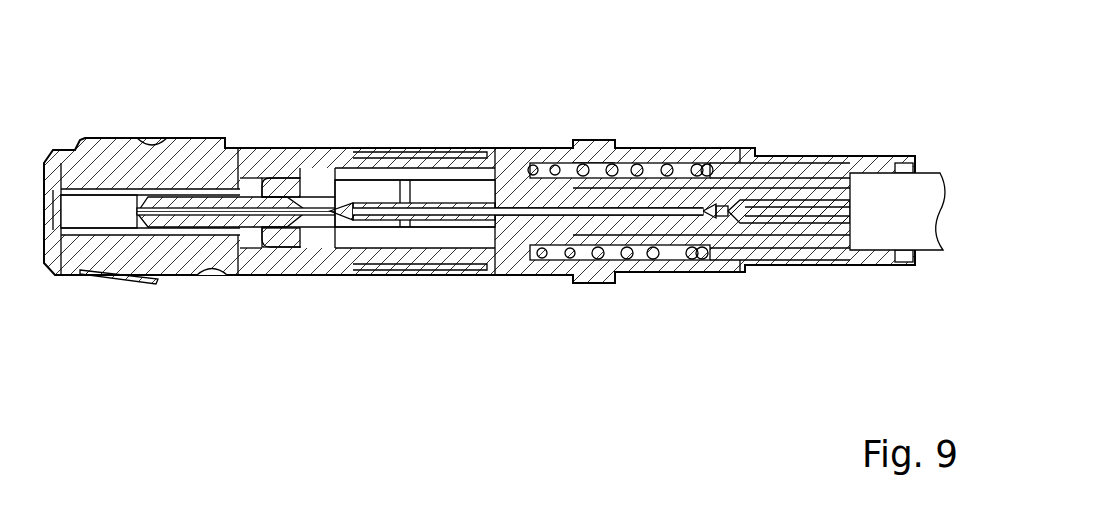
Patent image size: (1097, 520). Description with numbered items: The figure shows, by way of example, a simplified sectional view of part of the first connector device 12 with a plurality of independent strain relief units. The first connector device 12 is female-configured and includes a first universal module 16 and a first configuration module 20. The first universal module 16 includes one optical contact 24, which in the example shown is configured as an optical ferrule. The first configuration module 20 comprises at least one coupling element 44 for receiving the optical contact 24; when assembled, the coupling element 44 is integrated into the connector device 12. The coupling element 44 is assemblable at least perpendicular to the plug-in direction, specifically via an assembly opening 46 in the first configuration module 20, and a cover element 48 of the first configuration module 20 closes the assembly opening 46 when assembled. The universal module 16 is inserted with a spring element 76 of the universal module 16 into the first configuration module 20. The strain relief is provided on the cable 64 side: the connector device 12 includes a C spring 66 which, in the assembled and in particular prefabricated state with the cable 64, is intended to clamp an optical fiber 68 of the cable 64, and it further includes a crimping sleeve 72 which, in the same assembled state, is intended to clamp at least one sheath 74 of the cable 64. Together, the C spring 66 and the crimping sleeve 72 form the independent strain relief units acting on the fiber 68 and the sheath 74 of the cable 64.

The first connector device 12 is at (494, 230).
The first universal module 16 is at (318, 228).
The first configuration module 20 is at (328, 190).
The optical contact 24 is at (207, 265).
The coupling element 44 is at (105, 215).
The assembly opening 46 is at (258, 248).
The cover element 48 is at (103, 262).
The cable 64 is at (923, 203).
The C spring 66 is at (457, 172).
The optical fiber 68 is at (258, 195).
The crimping sleeve 72 is at (800, 165).
The sheath 74 is at (882, 228).
The spring element 76 is at (653, 258).